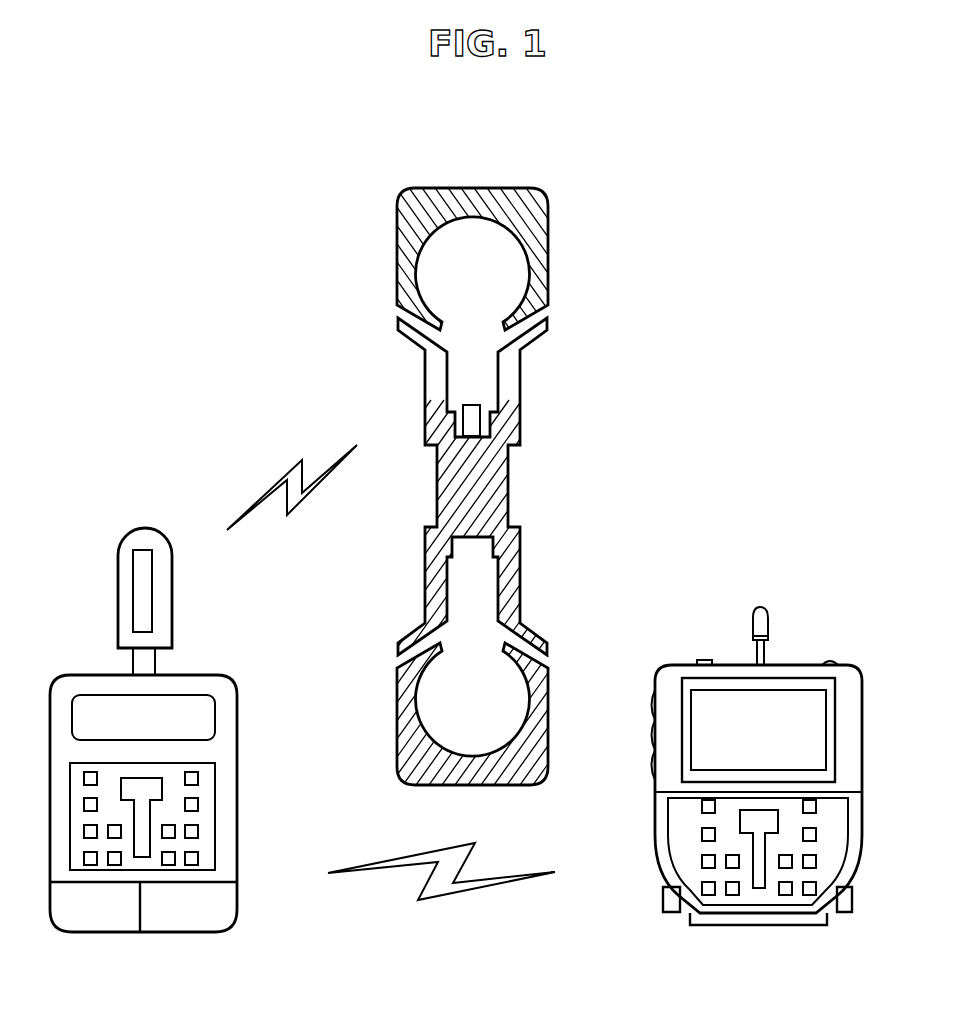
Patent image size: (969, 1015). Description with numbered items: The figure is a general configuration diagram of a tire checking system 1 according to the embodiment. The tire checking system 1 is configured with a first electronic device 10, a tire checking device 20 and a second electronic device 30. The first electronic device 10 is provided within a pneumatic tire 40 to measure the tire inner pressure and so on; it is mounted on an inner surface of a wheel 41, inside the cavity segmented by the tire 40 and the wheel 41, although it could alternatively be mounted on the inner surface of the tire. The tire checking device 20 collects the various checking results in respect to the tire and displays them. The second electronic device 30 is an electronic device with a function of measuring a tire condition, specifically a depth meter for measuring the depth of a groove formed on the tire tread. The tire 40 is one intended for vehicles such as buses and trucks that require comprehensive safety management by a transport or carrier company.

The tire checking system 1 is at (308, 194).
The first electronic device 10 is at (472, 425).
The tire checking device 20 is at (211, 650).
The second electronic device 30 is at (827, 640).
The pneumatic tire 40 is at (549, 236).
The wheel 41 is at (503, 488).